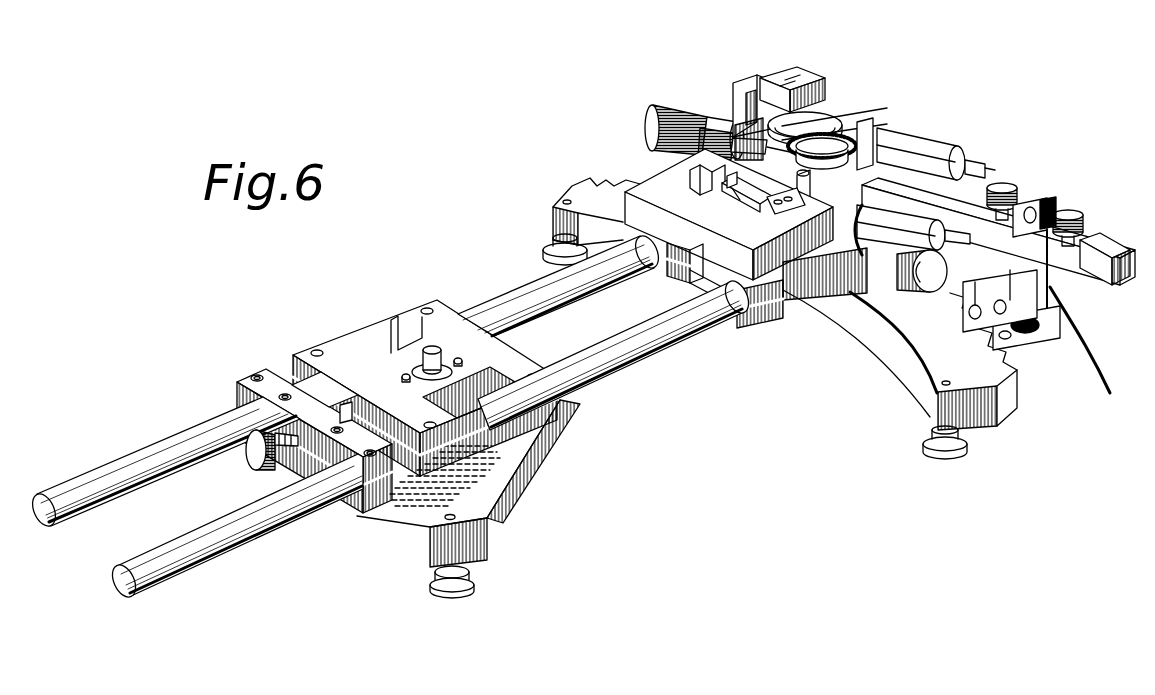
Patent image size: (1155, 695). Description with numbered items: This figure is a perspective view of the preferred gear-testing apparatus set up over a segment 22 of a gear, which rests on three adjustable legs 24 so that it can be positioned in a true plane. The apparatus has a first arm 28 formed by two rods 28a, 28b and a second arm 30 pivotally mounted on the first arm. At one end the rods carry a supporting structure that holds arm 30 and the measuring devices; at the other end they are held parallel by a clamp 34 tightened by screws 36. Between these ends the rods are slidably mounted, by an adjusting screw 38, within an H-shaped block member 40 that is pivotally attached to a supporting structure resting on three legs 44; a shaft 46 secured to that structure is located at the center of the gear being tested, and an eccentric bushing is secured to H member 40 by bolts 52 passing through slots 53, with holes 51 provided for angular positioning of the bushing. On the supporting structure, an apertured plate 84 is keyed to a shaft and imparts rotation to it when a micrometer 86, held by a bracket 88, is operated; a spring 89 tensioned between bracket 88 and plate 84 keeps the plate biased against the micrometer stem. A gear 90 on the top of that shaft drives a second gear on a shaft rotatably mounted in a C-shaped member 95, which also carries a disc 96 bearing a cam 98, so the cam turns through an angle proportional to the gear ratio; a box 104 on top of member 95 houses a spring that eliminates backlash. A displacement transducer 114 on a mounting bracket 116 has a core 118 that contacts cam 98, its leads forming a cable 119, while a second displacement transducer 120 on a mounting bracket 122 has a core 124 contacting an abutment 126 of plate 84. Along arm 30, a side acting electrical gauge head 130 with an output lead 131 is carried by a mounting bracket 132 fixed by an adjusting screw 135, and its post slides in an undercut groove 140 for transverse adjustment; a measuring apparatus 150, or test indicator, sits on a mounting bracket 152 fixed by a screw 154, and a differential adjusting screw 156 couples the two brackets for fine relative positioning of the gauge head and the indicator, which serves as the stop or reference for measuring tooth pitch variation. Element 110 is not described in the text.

The segment of a gear 22 is at (605, 182).
The adjustable legs 24 is at (543, 253).
The first arm 28 is at (689, 345).
The rod 28a is at (147, 452).
The rod 28b is at (192, 540).
The second arm 30 is at (960, 207).
The clamp 34 is at (268, 380).
The screws 36 is at (254, 376).
The adjusting screw 38 is at (255, 462).
The H-shaped block member 40 is at (375, 363).
The legs 44 is at (430, 585).
The shaft 46 is at (436, 350).
The holes 51 is at (402, 365).
The bolts 52 is at (462, 360).
The slots 53 is at (405, 384).
The second apertured plate 84 is at (733, 200).
The micrometer 86 is at (688, 137).
The bracket 88 is at (697, 173).
The spring 89 is at (693, 203).
The gear 90 is at (887, 130).
The C-shaped member 95 is at (747, 78).
The disc 96 is at (755, 120).
The cam 98 is at (833, 110).
The box 104 is at (827, 90).
The block 110 is at (800, 75).
The displacement transducer 114 is at (933, 150).
The mounting bracket 116 is at (875, 140).
The core 118 is at (860, 117).
The cable 119 is at (975, 162).
The displacement transducer 120 is at (913, 224).
The mounting bracket 122 is at (752, 263).
The core 124 is at (767, 206).
The abutment 126 is at (733, 204).
The side acting electrical gauge head 130 is at (968, 308).
The output lead 131 is at (1087, 350).
The mounting bracket 132 is at (1027, 213).
The adjusting screw 135 is at (1007, 187).
The undercut groove 140 is at (942, 274).
The measuring apparatus 150 is at (1050, 338).
The mounting bracket 152 is at (1097, 243).
The screw 154 is at (1080, 220).
The differential adjusting screw 156 is at (1050, 217).